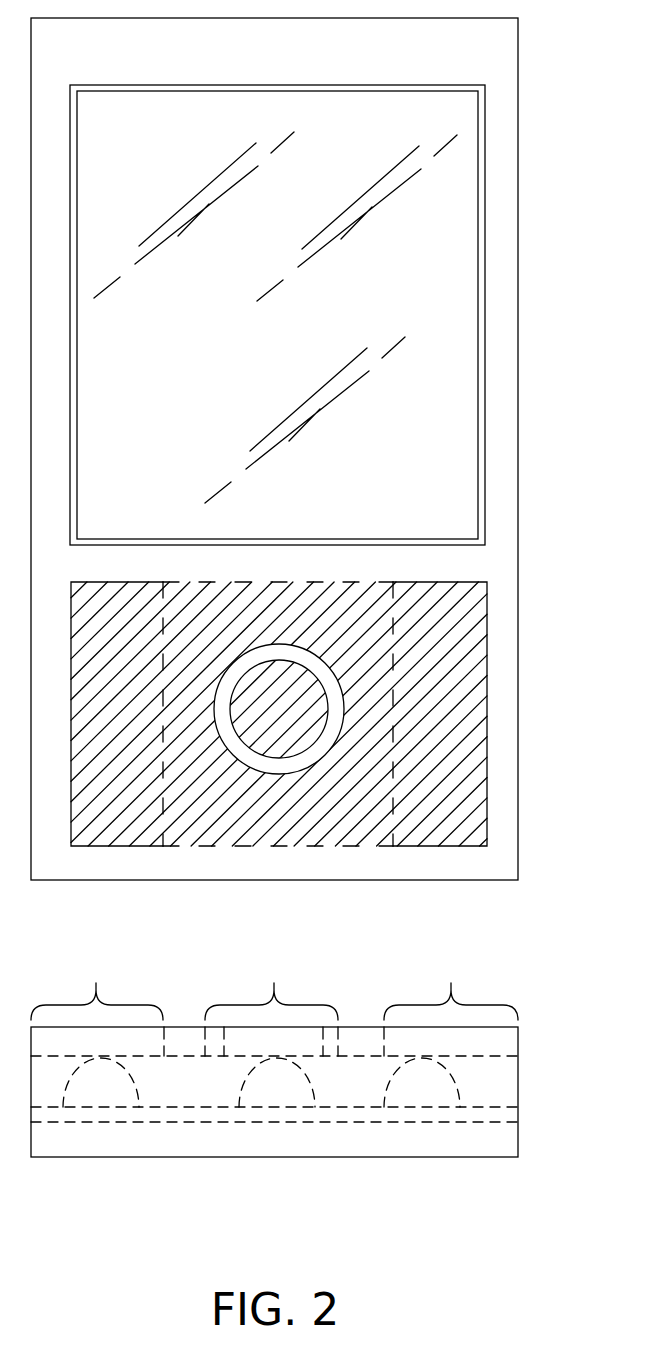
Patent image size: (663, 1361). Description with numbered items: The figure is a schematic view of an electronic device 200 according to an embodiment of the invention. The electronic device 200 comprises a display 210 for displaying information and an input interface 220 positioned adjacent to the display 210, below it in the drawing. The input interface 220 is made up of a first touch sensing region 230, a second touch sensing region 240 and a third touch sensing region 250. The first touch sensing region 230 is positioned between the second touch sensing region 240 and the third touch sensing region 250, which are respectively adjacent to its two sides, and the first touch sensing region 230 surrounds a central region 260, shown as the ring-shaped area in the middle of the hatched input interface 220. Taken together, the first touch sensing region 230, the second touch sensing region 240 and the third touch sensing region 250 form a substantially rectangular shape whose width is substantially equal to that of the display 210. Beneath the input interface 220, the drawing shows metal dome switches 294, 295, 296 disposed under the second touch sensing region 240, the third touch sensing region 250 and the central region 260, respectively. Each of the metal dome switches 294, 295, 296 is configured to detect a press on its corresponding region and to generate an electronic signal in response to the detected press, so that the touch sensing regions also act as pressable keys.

The electronic device 200 is at (485, 50).
The display 210 is at (458, 280).
The input interface 220 is at (280, 582).
The first touch sensing region 230 is at (185, 792).
The second touch sensing region 240 is at (106, 822).
The third touch sensing region 250 is at (458, 821).
The central region 260 is at (267, 765).
The metal dome switch 294 is at (102, 1095).
The metal dome switch 295 is at (427, 1095).
The metal dome switch 296 is at (282, 1095).